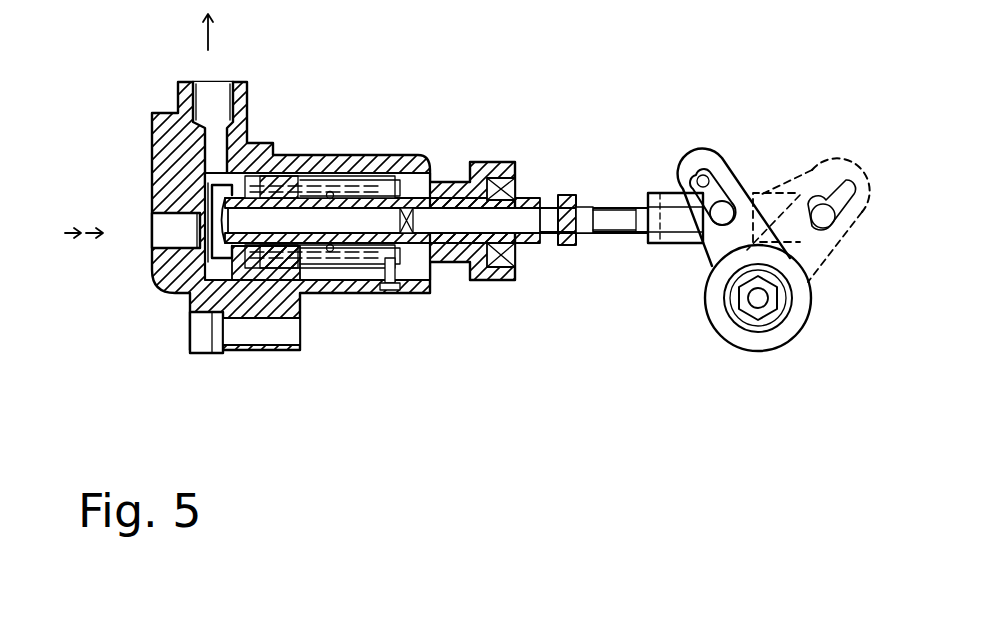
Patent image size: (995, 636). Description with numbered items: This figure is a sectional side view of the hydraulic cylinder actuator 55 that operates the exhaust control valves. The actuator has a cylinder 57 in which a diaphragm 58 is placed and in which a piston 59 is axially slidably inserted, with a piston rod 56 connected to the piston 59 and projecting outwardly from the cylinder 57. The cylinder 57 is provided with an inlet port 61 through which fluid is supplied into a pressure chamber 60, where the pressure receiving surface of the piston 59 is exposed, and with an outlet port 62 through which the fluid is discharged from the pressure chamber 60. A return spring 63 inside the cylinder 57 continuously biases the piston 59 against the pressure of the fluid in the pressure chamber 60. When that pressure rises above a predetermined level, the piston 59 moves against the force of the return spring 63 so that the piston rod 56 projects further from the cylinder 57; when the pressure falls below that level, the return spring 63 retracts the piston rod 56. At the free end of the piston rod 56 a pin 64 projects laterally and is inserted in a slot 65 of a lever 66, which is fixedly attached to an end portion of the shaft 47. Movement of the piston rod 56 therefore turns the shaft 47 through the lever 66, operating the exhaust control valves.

The shaft 47 is at (742, 302).
The hydraulic cylinder actuator 55 is at (455, 141).
The piston rod 56 is at (610, 232).
The cylinder 57 is at (360, 297).
The diaphragm 58 is at (290, 158).
The piston 59 is at (310, 297).
The pressure chamber 60 is at (182, 295).
The inlet port 61 is at (130, 240).
The outlet port 62 is at (215, 100).
The return spring 63 is at (340, 160).
The pin 64 is at (738, 195).
The slot 65 is at (712, 165).
The lever 66 is at (759, 237).